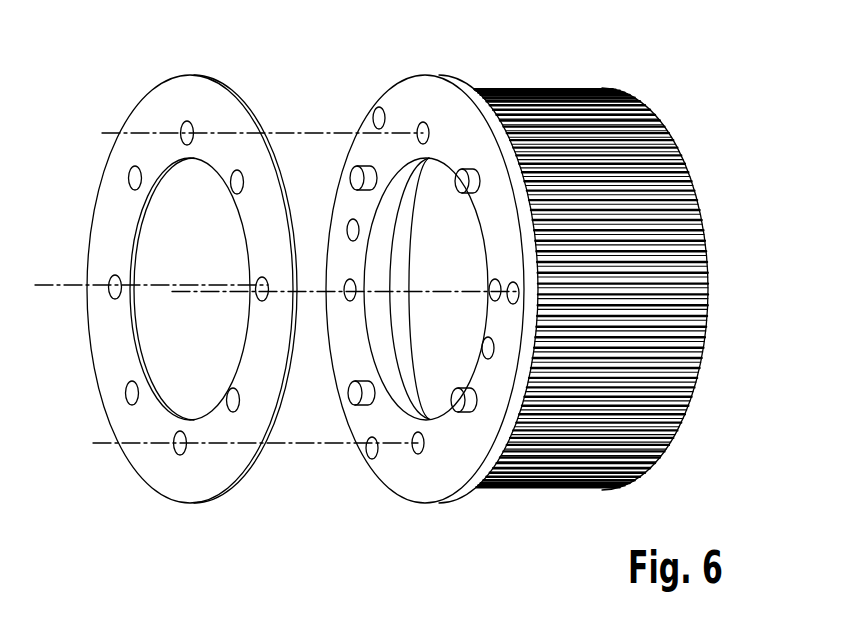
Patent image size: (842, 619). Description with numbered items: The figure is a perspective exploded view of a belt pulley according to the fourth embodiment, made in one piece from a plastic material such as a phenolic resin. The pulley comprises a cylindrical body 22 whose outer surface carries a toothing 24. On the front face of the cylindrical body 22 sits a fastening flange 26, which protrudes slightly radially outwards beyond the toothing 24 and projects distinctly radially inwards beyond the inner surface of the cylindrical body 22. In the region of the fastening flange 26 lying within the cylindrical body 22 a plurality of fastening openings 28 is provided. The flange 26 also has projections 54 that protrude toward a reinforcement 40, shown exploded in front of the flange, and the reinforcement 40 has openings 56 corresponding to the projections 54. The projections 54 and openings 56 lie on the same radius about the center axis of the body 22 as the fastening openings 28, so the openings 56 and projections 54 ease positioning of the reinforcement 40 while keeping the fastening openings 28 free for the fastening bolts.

The cylindrical body 22 is at (604, 280).
The toothing 24 is at (662, 147).
The fastening flange 26 is at (417, 88).
The fastening openings 28 is at (420, 124).
The reinforcement 40 is at (192, 87).
The projections 54 is at (470, 172).
The openings 56 is at (182, 130).